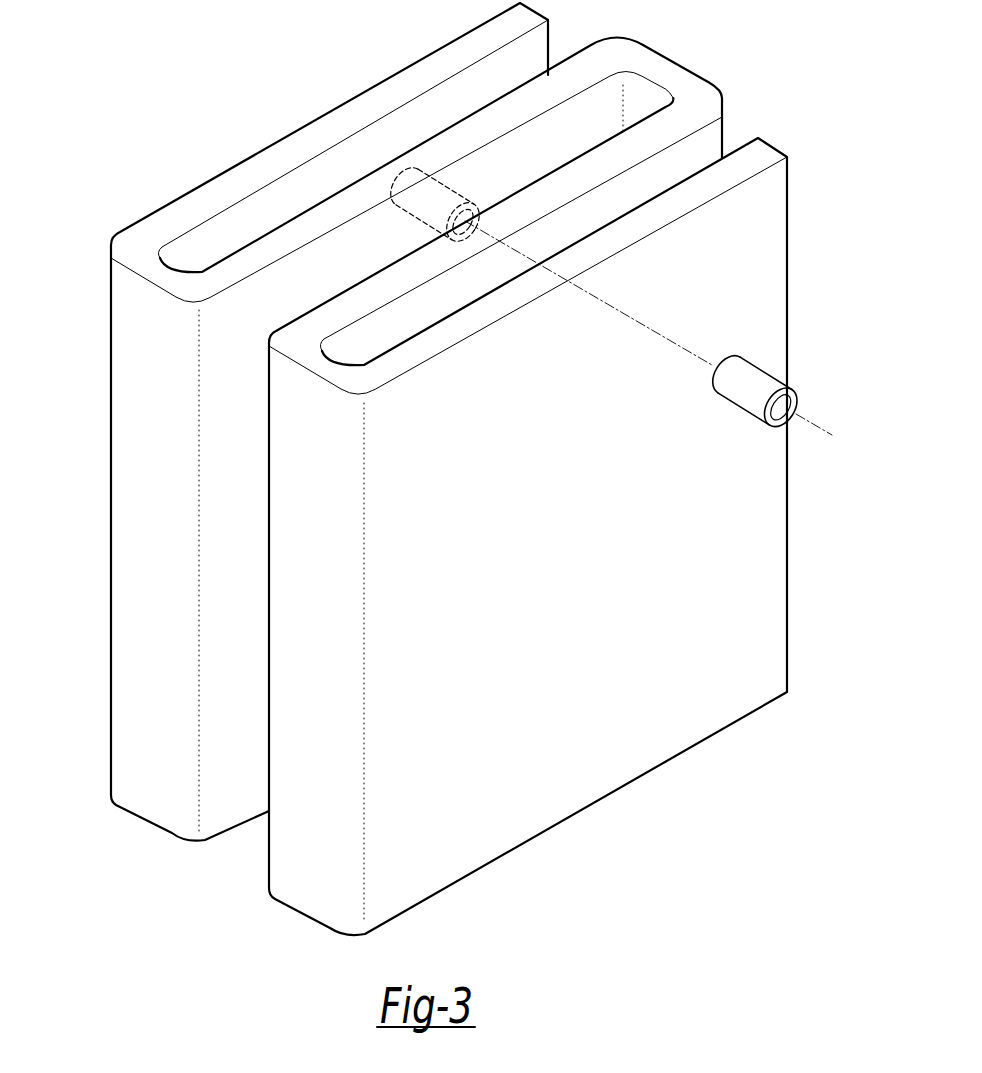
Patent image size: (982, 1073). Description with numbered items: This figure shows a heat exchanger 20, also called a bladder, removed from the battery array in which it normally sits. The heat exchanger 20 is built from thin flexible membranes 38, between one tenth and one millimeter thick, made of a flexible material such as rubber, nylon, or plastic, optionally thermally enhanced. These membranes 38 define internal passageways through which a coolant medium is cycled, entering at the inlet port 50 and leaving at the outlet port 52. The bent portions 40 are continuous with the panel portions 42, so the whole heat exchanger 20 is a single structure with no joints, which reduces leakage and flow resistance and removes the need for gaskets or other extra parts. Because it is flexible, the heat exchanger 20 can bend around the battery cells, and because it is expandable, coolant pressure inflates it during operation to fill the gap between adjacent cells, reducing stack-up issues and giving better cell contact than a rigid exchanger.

The heat exchanger 20 is at (211, 123).
The flexible membranes 38 is at (123, 553).
The bent portions 40 is at (143, 373).
The panel portions 42 is at (600, 509).
The inlet port 50 is at (774, 411).
The outlet port 52 is at (403, 186).